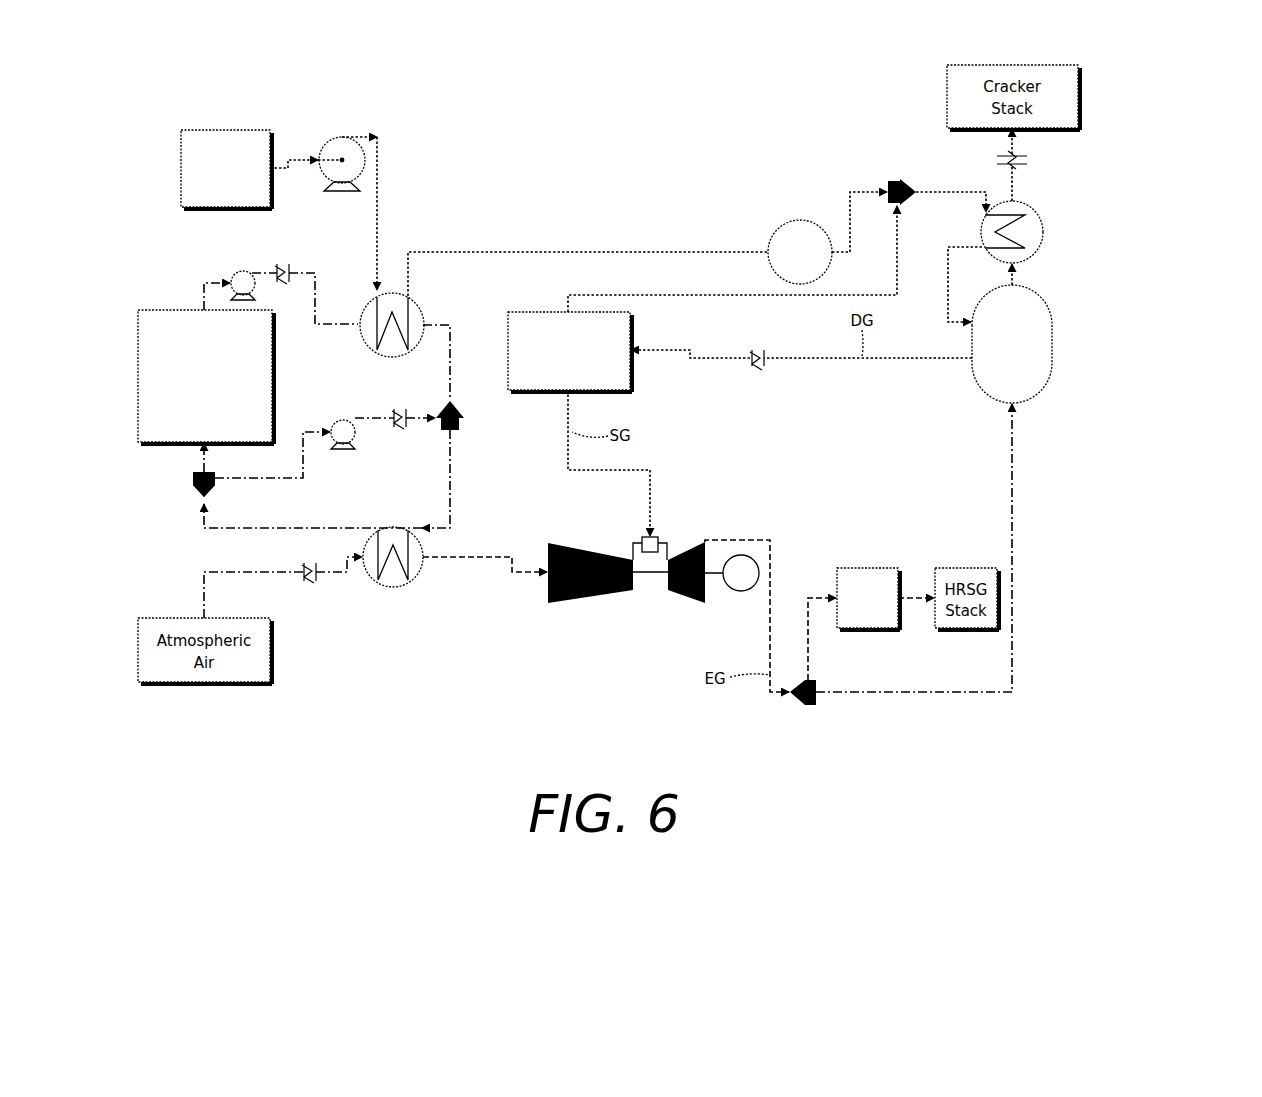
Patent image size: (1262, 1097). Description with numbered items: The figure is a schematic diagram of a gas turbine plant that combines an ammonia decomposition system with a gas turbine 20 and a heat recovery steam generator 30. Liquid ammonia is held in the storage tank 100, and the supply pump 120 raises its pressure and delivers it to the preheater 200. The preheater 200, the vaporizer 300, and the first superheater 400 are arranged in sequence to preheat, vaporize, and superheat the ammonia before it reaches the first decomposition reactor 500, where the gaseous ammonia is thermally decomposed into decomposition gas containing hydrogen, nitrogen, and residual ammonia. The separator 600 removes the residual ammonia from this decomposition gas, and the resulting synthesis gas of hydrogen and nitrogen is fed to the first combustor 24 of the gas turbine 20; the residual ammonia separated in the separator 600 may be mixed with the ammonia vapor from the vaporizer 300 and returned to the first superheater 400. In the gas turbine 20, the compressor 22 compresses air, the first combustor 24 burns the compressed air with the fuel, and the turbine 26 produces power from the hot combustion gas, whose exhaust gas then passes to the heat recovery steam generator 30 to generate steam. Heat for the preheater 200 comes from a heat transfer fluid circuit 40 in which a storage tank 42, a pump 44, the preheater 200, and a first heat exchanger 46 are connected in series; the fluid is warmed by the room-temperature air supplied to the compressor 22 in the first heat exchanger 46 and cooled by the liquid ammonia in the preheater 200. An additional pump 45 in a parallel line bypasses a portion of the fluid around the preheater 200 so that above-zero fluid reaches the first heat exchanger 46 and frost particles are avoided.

The storage tank 100 is at (227, 130).
The supply pump 120 is at (341, 150).
The pump 44 is at (234, 275).
The storage tank 42 is at (138, 375).
The additional pump 45 is at (343, 420).
The heat transfer fluid circuit 40 is at (165, 470).
The first heat exchanger 46 is at (394, 588).
The preheater 200 is at (420, 306).
The vaporizer 300 is at (770, 243).
The first superheater 400 is at (1045, 232).
The first decomposition reactor 500 is at (1053, 340).
The separator 600 is at (632, 375).
The gas turbine 20 is at (653, 603).
The compressor 22 is at (588, 603).
The first combustor 24 is at (650, 553).
The turbine 26 is at (686, 590).
The heat recovery steam generator 30 is at (868, 630).